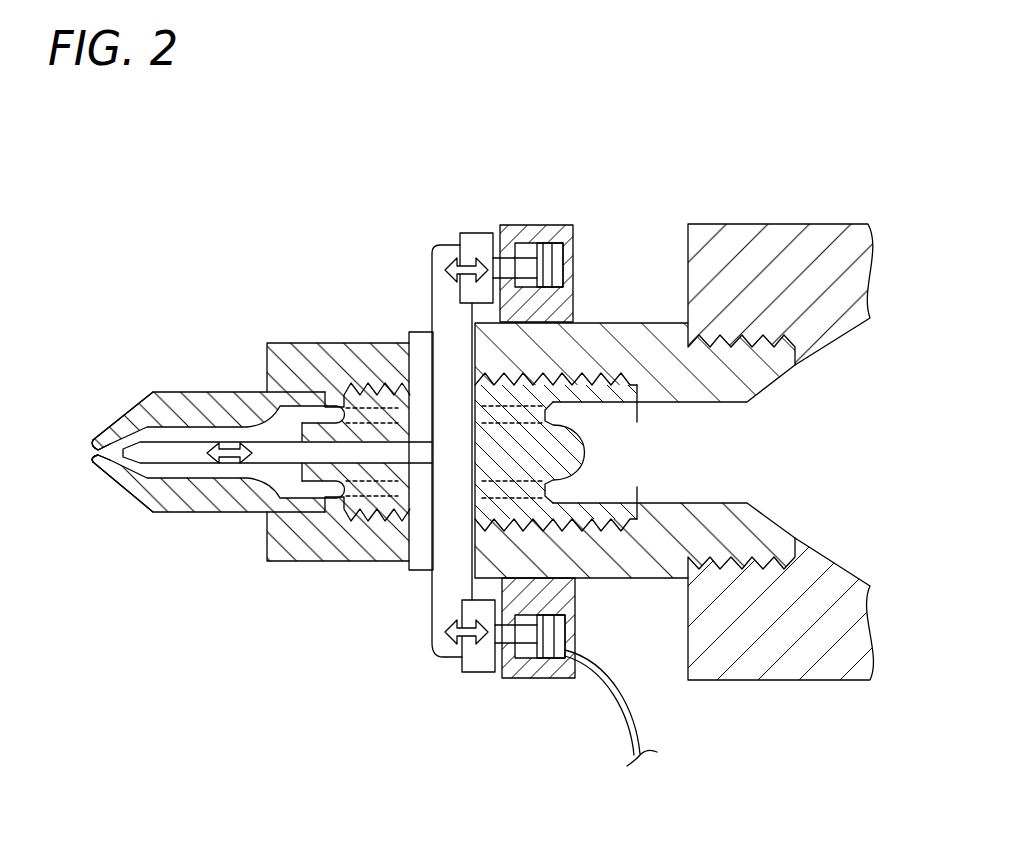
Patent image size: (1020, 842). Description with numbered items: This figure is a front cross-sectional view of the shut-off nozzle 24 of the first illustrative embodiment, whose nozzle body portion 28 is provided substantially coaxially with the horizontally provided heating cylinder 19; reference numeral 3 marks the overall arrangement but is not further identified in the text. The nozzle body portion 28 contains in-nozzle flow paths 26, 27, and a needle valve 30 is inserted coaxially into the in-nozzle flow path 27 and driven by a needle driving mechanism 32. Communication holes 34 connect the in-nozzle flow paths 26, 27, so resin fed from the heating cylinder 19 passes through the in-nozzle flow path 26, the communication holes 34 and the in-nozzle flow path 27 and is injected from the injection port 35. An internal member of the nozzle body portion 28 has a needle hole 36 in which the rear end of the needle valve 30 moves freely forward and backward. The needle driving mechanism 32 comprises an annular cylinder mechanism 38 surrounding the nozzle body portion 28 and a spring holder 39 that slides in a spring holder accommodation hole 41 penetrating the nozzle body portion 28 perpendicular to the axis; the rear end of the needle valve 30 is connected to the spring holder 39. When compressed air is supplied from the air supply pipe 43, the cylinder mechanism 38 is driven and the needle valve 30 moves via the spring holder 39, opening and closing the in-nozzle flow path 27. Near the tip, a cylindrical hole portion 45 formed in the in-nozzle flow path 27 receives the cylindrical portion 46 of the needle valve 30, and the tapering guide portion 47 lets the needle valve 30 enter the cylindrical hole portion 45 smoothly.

The surgical instrument 3 is at (682, 395).
The heating cylinder 19 is at (750, 224).
The shut-off nozzle 24 is at (387, 375).
The in-nozzle flow path 26 is at (690, 437).
The in-nozzle flow path 27 is at (203, 510).
The nozzle body portion 28 is at (263, 419).
The needle valve 30 is at (190, 392).
The needle driving mechanism 32 is at (555, 404).
The communication holes 34 is at (355, 488).
The injection port 35 is at (90, 448).
The needle hole 36 is at (300, 441).
The cylinder mechanism 38 is at (541, 243).
The spring holder 39 is at (432, 298).
The spring holder accommodation hole 41 is at (421, 560).
The air supply pipe 43 is at (613, 693).
The cylindrical hole portion 45 is at (102, 437).
The cylindrical portion 46 is at (142, 443).
The guide portion 47 is at (122, 468).